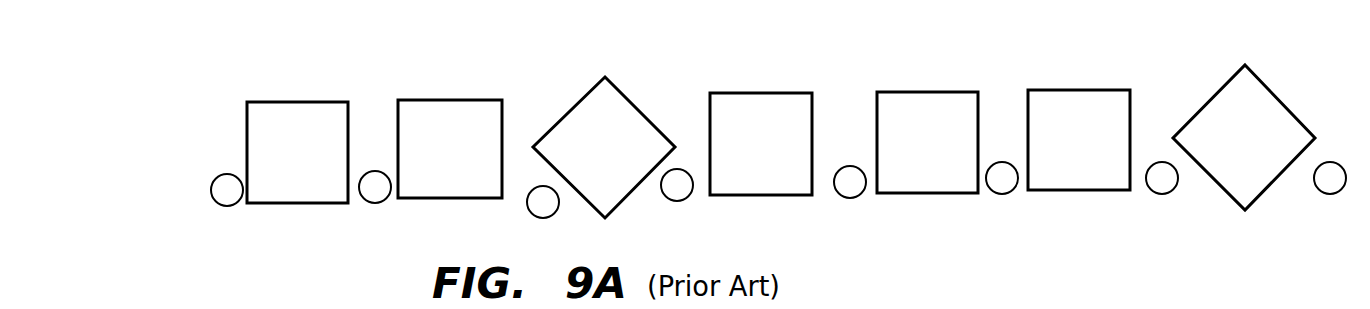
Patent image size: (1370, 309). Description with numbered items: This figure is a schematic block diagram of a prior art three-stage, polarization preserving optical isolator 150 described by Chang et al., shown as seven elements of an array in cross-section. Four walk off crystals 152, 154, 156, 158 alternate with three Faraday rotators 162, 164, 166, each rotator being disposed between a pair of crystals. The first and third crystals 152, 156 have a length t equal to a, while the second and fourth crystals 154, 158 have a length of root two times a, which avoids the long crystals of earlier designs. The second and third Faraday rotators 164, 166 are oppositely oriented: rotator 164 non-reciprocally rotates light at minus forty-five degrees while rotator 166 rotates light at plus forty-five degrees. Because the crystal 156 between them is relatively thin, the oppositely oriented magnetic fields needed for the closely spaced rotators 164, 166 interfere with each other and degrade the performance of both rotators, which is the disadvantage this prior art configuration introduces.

The prior art polarization mode dispersion compensation sequence 150 is at (148, 120).
The walk off crystal 152 is at (250, 101).
The walk off crystal 154 is at (628, 100).
The walk off crystal 156 is at (910, 193).
The walk off crystal 158 is at (1203, 105).
The Faraday rotator 162 is at (450, 198).
The Faraday rotator 164 is at (740, 195).
The Faraday rotator 166 is at (1073, 190).